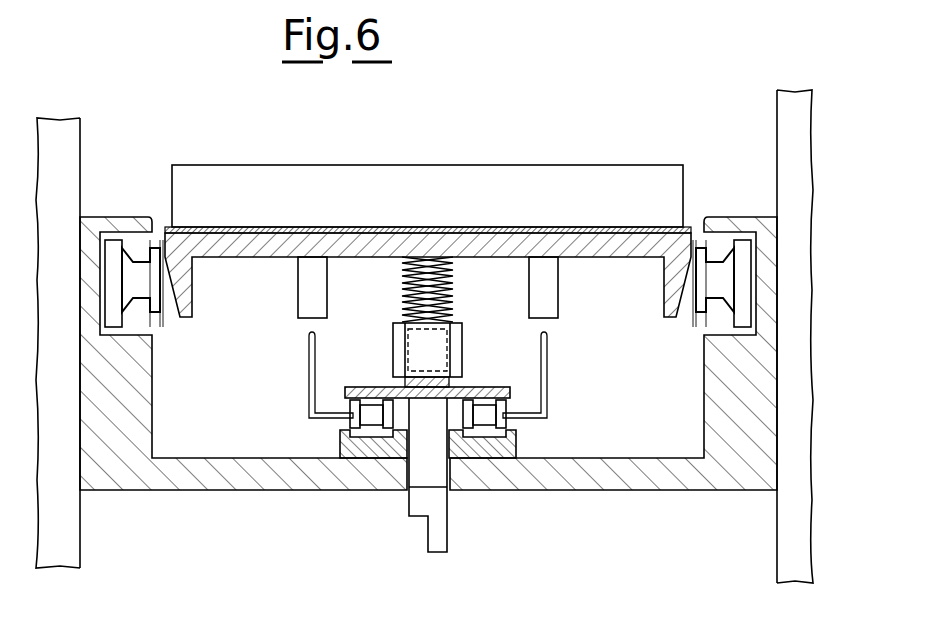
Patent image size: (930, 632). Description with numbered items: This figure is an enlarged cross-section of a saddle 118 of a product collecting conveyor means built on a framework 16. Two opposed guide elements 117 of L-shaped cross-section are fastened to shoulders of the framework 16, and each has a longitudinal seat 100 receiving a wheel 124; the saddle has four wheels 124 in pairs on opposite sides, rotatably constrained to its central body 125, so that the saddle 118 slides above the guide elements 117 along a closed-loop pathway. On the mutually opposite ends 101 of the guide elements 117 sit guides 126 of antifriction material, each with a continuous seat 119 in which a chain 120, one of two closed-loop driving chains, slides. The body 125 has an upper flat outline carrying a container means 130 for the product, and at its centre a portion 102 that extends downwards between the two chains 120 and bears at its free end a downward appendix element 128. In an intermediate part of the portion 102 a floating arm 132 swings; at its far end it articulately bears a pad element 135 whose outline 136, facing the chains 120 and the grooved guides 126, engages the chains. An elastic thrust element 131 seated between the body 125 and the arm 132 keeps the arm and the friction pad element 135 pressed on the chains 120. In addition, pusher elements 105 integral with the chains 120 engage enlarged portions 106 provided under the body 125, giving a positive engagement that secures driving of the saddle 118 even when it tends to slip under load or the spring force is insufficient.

The framework 16 is at (72, 133).
The longitudinal seat 100 is at (107, 233).
The end of guide element 101 is at (393, 477).
The downward-extending portion 102 is at (428, 473).
The pusher element 105 is at (310, 341).
The enlarged portion 106 is at (298, 284).
The guide element 117 is at (727, 385).
The saddle 118 is at (525, 166).
The continuous seat 119 is at (344, 445).
The chain 120 is at (368, 416).
The wheel 124 is at (137, 292).
The body 125 is at (255, 245).
The guide 126 is at (378, 455).
The appendix element 128 is at (434, 545).
The container means 130 is at (633, 180).
The elastic thrust element 131 is at (453, 278).
The floating arm 132 is at (428, 350).
The pad element 135 is at (462, 385).
The outline 136 is at (372, 388).